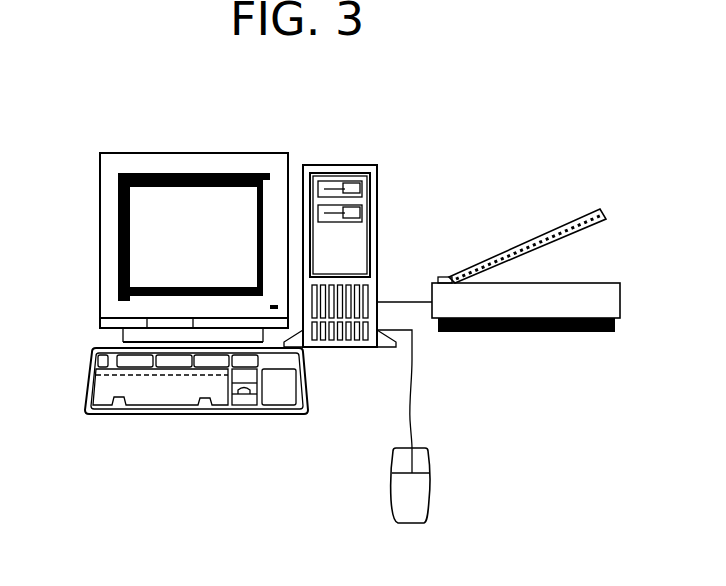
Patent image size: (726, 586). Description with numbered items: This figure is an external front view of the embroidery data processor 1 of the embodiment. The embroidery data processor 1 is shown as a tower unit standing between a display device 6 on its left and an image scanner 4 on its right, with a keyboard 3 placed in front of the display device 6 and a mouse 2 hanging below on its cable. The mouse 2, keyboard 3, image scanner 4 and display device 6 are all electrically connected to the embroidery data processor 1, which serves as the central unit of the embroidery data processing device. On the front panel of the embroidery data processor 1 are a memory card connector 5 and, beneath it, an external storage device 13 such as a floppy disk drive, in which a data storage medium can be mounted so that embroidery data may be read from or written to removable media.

The embroidery data processor 1 is at (369, 212).
The mouse 2 is at (423, 463).
The keyboard 3 is at (89, 360).
The image scanner 4 is at (577, 283).
The memory card connector 5 is at (351, 185).
The display device 6 is at (155, 153).
The external storage device 13 is at (363, 212).